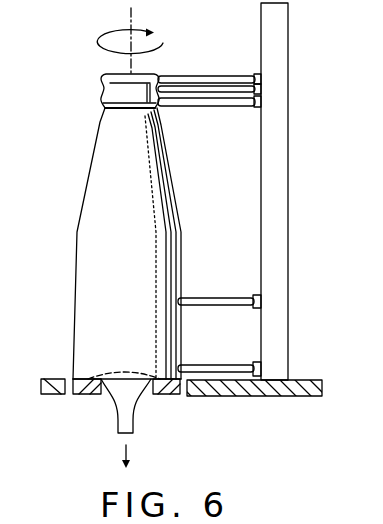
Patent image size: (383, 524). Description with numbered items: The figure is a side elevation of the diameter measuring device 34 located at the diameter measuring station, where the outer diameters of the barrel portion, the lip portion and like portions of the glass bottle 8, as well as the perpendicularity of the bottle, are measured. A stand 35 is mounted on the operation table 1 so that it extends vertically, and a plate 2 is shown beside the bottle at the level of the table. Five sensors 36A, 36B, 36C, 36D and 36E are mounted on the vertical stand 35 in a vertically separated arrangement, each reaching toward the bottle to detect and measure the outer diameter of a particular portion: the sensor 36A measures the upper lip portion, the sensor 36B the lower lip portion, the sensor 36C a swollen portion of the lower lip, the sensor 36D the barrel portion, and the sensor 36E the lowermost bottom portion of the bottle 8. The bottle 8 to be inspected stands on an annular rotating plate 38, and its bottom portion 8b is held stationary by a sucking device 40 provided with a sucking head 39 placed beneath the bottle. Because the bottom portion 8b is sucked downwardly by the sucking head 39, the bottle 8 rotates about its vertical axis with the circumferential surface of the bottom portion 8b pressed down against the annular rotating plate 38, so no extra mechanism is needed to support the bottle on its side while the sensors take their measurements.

The operation table 1 is at (304, 381).
The support plate 2 is at (52, 378).
The glass bottle 8 is at (88, 181).
The bottom portion 8b is at (116, 373).
The diameter measuring device 34 is at (320, 71).
The stand 35 is at (286, 182).
The sensor 36A is at (231, 76).
The sensor 36B is at (217, 88).
The sensor 36C is at (246, 108).
The sensor 36D is at (235, 297).
The sensor 36E is at (234, 365).
The annular rotating plate 38 is at (83, 395).
The sucking head 39 is at (133, 393).
The sucking device 40 is at (107, 415).